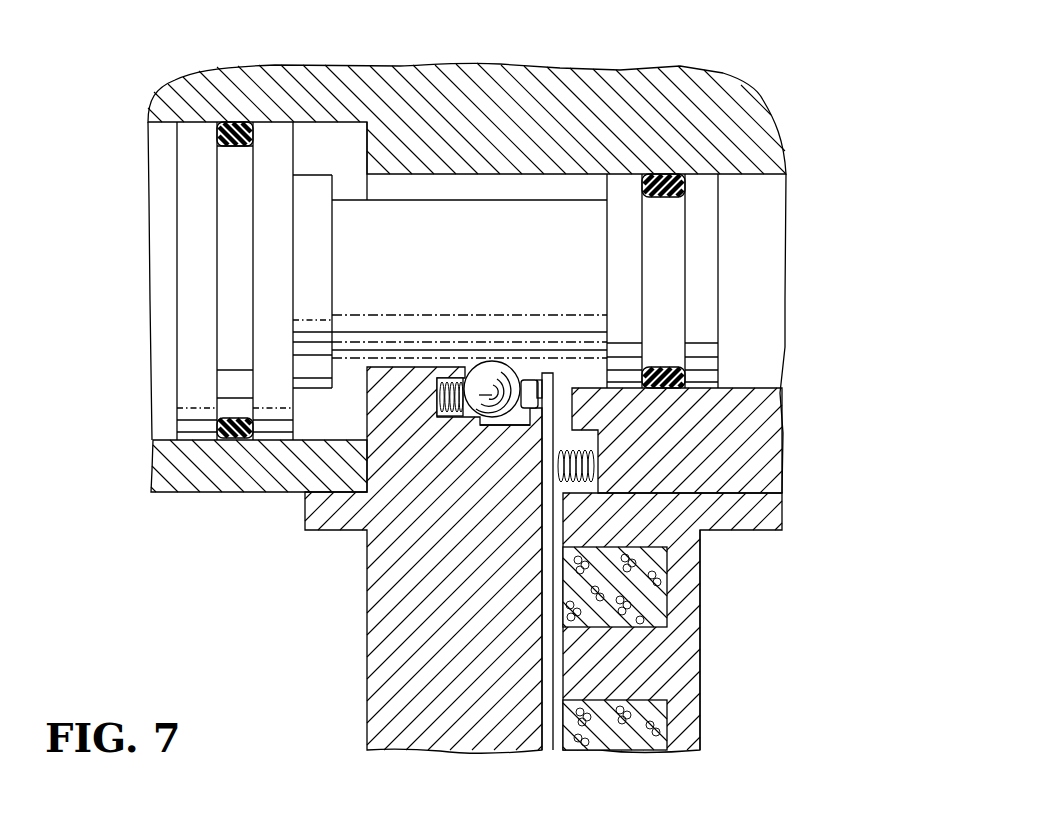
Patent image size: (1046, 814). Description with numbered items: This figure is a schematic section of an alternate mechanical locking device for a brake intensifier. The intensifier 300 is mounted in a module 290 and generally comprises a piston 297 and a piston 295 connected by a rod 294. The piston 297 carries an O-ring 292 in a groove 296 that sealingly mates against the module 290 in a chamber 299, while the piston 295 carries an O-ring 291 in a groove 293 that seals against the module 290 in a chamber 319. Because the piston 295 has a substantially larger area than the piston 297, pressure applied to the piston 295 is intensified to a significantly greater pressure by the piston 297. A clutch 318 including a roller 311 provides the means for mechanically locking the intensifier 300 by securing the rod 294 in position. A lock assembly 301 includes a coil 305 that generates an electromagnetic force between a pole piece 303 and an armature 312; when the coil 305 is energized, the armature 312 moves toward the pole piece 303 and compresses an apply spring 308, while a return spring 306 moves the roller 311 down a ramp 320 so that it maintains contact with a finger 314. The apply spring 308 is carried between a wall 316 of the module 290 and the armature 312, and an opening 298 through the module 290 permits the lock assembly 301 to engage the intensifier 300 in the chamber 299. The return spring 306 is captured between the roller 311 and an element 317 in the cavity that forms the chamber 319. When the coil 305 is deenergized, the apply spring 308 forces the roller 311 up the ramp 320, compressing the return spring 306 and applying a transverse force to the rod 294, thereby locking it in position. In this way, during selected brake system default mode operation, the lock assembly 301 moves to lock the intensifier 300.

The module 290 is at (497, 68).
The O-ring 291 is at (237, 128).
The O-ring 292 is at (653, 175).
The groove 293 is at (220, 193).
The rod 294 is at (353, 227).
The piston 295 is at (200, 285).
The groove 296 is at (687, 262).
The piston 297 is at (703, 298).
The opening 298 is at (364, 463).
The chamber 299 is at (553, 183).
The intensifier 300 is at (129, 197).
The lock assembly 301 is at (708, 584).
The pole piece 303 is at (678, 535).
The coil 305 is at (657, 612).
The return spring 306 is at (443, 403).
The apply spring 308 is at (587, 468).
The roller 311 is at (505, 418).
The armature 312 is at (550, 408).
The finger 314 is at (530, 380).
The wall 316 is at (598, 432).
The element 317 is at (390, 645).
The clutch 318 is at (522, 433).
The chamber 319 is at (328, 137).
The ramp 320 is at (492, 398).